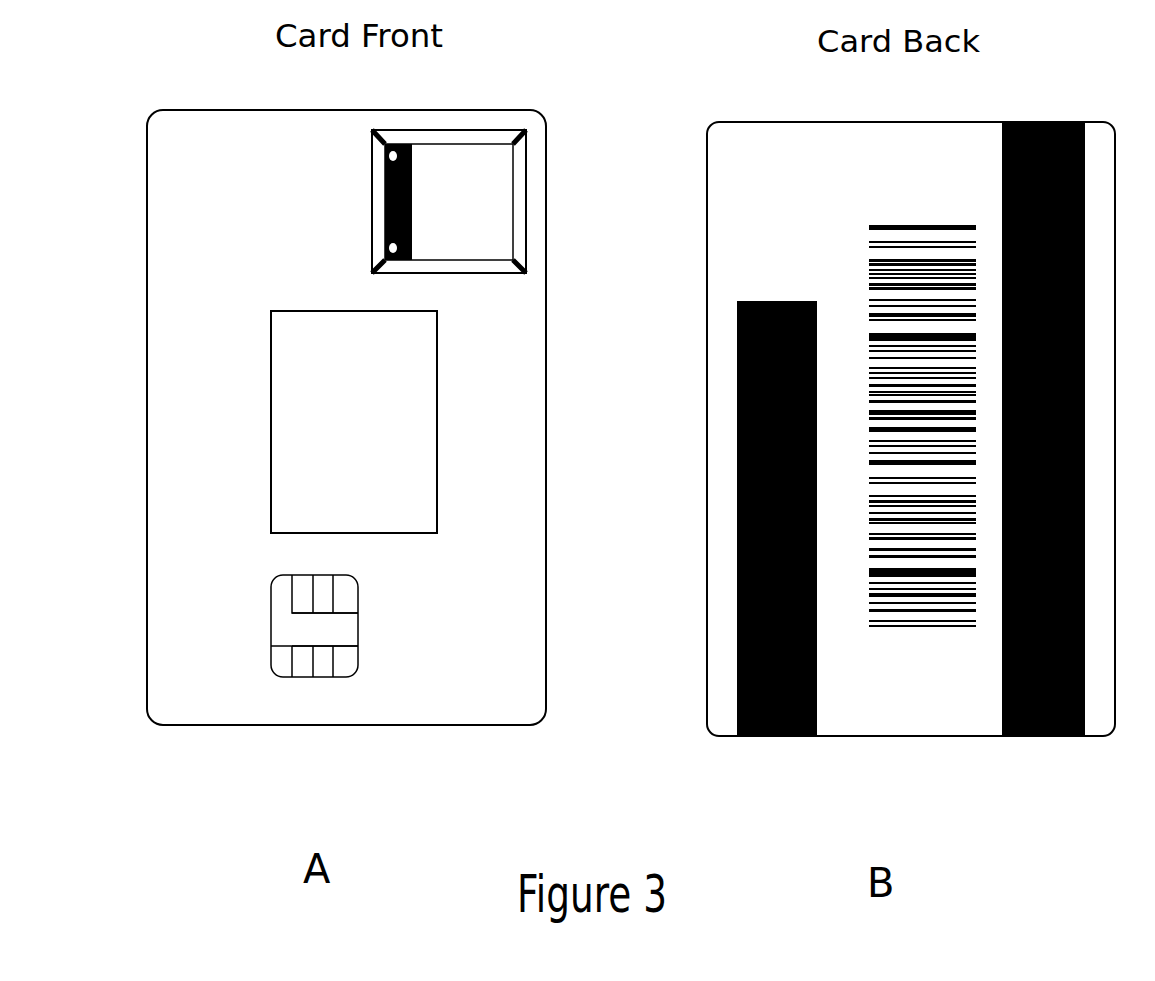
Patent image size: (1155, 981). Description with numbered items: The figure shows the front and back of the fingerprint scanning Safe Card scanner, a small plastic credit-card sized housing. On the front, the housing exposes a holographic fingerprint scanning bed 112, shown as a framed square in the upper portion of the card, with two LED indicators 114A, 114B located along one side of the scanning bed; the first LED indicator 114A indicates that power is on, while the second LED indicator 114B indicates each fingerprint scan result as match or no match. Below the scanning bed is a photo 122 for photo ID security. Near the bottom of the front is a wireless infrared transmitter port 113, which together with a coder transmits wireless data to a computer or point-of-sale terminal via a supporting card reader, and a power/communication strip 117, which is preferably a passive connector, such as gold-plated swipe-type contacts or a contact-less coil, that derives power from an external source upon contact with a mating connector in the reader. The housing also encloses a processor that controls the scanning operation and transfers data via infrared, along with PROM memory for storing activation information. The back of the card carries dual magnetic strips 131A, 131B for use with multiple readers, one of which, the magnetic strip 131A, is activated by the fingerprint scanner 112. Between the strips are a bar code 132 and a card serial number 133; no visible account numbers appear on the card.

The holographic fingerprint scanning bed 112 is at (449, 201).
The wireless infrared transmitter port 113 is at (283, 627).
The LED indicator 114A is at (402, 145).
The LED indicator 114B is at (407, 260).
The power/communication strip 117 is at (319, 637).
The photo 122 is at (354, 422).
The magnetic strip 131A is at (737, 723).
The magnetic strip 131B is at (1058, 737).
The bar code 132 is at (917, 630).
The card serial number 133 is at (850, 633).